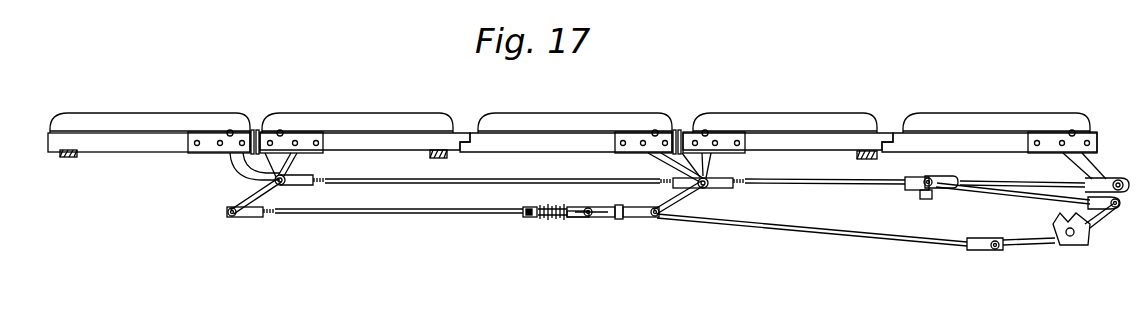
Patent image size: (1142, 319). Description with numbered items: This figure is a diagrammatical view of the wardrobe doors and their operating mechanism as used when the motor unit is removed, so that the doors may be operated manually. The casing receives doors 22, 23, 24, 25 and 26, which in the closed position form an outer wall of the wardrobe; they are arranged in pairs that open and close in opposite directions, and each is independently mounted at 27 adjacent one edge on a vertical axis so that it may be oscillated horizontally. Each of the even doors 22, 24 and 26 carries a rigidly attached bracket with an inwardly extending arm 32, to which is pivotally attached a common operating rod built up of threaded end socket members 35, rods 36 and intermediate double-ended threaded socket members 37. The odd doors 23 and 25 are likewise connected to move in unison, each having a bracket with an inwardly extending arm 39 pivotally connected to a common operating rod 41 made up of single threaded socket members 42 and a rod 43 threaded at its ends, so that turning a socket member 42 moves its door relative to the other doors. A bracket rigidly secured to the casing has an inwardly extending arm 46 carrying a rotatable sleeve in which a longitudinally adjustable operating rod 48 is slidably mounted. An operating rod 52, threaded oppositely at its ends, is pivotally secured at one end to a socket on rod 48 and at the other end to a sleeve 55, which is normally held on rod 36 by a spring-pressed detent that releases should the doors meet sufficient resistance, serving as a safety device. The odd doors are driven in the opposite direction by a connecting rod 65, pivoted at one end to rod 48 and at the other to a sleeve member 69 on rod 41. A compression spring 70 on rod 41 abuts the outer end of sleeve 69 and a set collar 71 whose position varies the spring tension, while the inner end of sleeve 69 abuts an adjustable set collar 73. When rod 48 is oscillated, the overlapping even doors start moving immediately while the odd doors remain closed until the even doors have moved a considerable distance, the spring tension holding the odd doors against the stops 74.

The door 22 is at (926, 147).
The door 23 is at (766, 143).
The door 24 is at (533, 143).
The door 25 is at (357, 143).
The door 26 is at (152, 138).
The pivotal mounting point 27 is at (279, 131).
The inwardly extending arm 32 is at (231, 163).
The threaded end socket member 35 is at (302, 185).
The rod 36 is at (506, 175).
The intermediate double-ended threaded socket member 37 is at (712, 188).
The inwardly extending arm 39 is at (301, 165).
The common operating rod 41 is at (352, 214).
The single threaded socket member 42 is at (247, 218).
The rod 43 is at (561, 217).
The inwardly extending arm 46 is at (1056, 222).
The longitudinally adjustable operating rod 48 is at (1040, 244).
The operating rod 52 is at (1022, 193).
The sleeve 55 is at (915, 177).
The connecting rod 65 is at (800, 230).
The sleeve member 69 is at (577, 218).
The compression spring 70 is at (546, 206).
The set collar 71 is at (528, 217).
The set collar 73 is at (619, 206).
The stop 74 is at (63, 157).